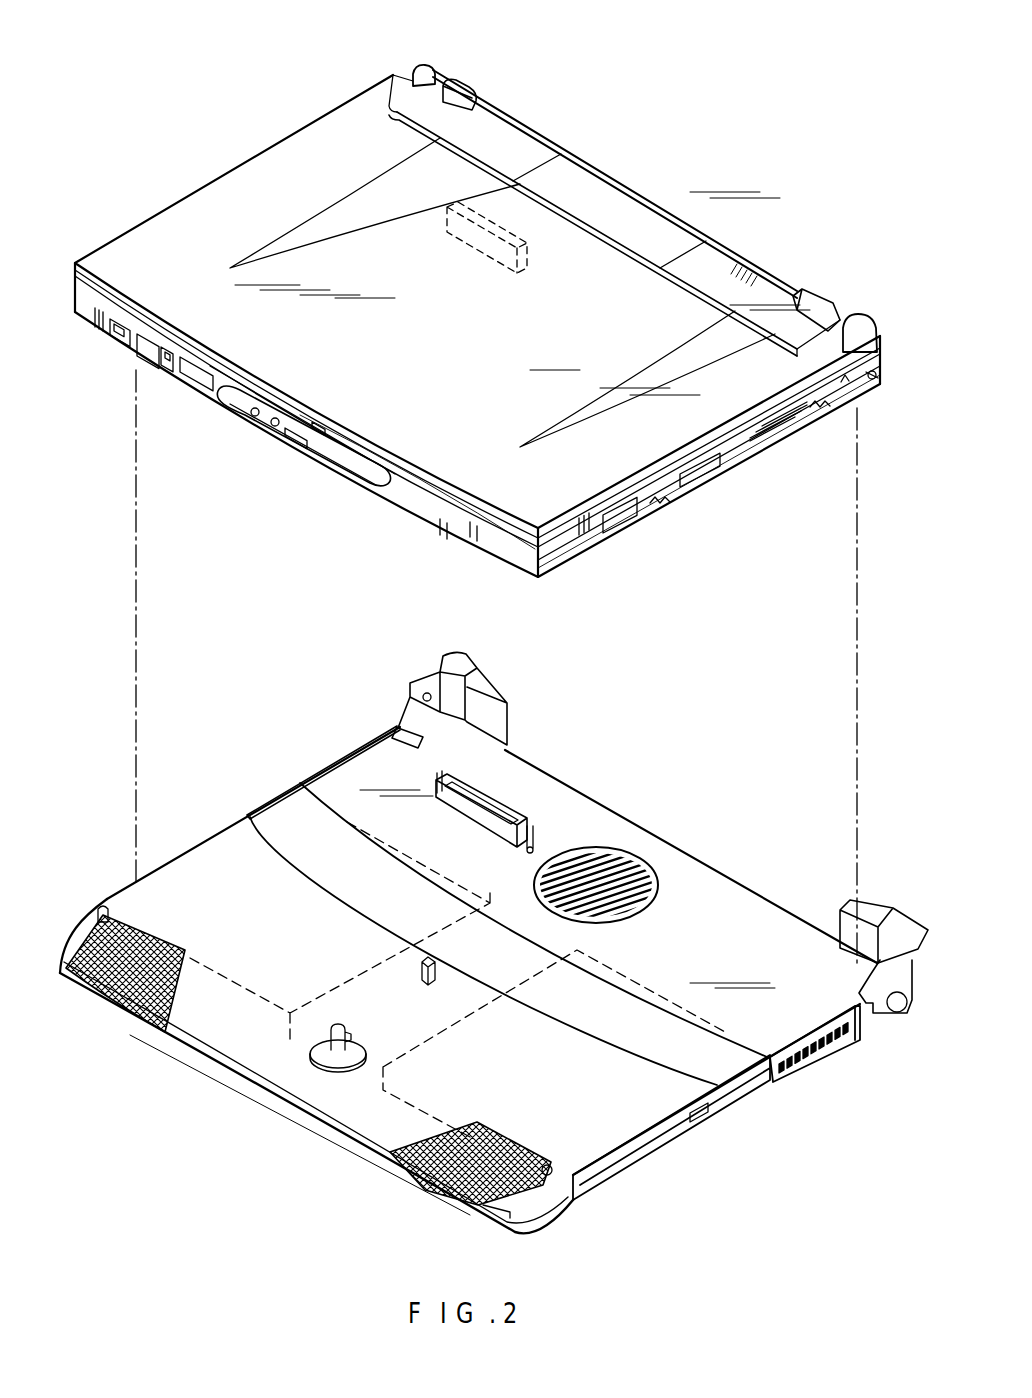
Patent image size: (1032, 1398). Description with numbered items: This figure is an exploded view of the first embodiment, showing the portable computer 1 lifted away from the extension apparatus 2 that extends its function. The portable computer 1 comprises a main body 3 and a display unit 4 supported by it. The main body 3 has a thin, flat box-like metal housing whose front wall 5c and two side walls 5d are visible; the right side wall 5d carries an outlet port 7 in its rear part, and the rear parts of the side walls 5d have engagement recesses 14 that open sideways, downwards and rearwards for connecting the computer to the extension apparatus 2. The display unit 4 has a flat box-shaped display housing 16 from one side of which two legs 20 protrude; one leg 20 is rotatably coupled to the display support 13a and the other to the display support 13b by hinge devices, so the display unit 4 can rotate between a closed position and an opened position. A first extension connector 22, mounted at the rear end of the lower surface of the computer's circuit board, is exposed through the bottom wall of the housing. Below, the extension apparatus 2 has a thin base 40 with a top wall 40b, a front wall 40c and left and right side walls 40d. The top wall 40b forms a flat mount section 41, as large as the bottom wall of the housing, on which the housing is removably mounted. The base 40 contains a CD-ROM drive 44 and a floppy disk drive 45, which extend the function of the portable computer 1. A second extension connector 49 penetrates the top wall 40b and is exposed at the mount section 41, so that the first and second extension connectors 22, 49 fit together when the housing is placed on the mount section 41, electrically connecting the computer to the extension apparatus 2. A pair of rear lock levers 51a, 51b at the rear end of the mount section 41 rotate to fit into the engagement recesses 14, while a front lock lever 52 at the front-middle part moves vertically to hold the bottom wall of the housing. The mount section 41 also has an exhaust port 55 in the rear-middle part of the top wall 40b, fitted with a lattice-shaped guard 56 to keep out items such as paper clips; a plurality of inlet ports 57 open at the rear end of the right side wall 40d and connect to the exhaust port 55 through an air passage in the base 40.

The portable computer 1 is at (250, 152).
The extension apparatus 2 is at (657, 826).
The main body 3 is at (570, 550).
The display unit 4 is at (360, 422).
The front wall 5c is at (417, 503).
The side walls 5d is at (700, 463).
The outlet port 7 is at (763, 433).
The display support 13a is at (436, 70).
The display support 13b is at (862, 323).
The engagement recesses 14 is at (875, 380).
The display housing 16 is at (188, 228).
The legs 20 is at (462, 84).
The first extension connector 22 is at (490, 248).
The base 40 is at (328, 1125).
The top wall 40b is at (297, 830).
The front wall 40c is at (245, 1083).
The side walls 40d is at (845, 1043).
The mount section 41 is at (458, 979).
The CD-ROM drive 44 is at (643, 1148).
The floppy disk drive 45 is at (212, 868).
The second extension connector 49 is at (498, 808).
The rear lock lever 51a is at (462, 672).
The rear lock lever 51b is at (890, 930).
The front lock lever 52 is at (350, 1038).
The exhaust port 55 is at (648, 868).
The lattice-shaped guard 56 is at (605, 920).
The inlet ports 57 is at (815, 1045).